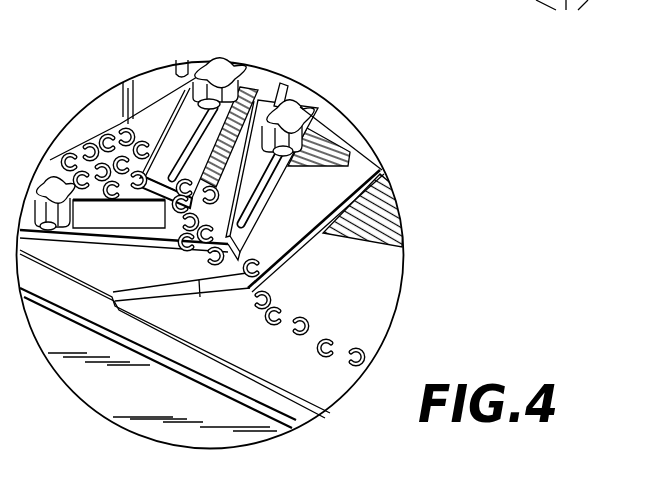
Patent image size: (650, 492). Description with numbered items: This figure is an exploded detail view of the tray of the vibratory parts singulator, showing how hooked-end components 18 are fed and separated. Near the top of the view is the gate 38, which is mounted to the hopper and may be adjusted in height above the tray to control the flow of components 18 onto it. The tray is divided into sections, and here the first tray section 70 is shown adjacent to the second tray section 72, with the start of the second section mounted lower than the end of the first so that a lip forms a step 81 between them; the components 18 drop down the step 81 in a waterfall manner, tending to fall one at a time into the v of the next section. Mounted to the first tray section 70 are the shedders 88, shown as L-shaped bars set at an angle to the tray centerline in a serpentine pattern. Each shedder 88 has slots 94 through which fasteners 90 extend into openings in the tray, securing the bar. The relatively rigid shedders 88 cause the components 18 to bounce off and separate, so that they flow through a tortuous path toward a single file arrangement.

The components 18 is at (332, 366).
The gate 38 is at (90, 130).
The first section 70 is at (343, 152).
The second section 72 is at (368, 259).
The step 81 is at (382, 185).
The shedder 88 is at (213, 63).
The fasteners 90 is at (233, 67).
The slots 94 is at (190, 137).